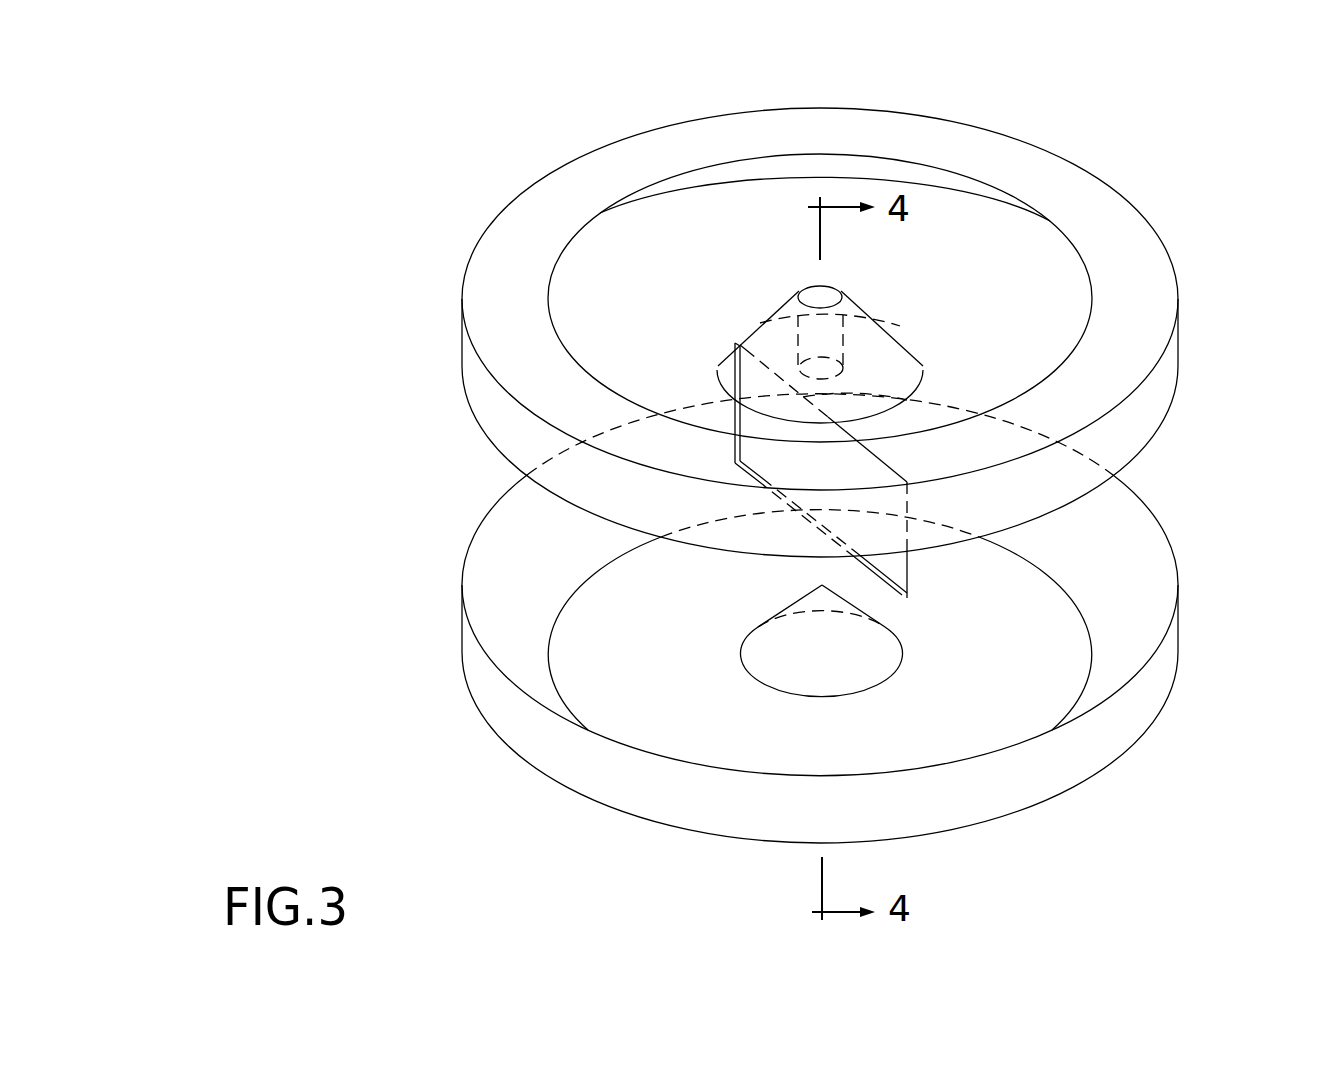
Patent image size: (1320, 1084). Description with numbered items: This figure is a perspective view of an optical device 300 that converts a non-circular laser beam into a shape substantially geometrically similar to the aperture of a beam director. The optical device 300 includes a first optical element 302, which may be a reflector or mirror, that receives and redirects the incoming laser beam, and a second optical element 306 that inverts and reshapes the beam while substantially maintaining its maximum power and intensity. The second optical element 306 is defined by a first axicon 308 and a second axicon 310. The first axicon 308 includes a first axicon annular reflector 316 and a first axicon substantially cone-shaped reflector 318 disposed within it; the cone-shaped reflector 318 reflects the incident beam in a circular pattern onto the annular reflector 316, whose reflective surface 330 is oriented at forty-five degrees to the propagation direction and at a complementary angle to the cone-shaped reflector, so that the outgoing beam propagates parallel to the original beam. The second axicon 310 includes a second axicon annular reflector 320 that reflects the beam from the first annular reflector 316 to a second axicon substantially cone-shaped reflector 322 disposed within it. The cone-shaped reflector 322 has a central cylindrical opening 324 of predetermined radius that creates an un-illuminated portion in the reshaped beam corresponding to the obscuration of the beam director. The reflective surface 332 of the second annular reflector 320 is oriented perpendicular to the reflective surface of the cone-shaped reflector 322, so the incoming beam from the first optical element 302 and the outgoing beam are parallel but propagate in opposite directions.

The optical device 300 is at (1168, 98).
The first optical element 302 is at (907, 597).
The second optical element 306 is at (1158, 470).
The first axicon 308 is at (887, 618).
The second axicon 310 is at (890, 332).
The first axicon annular reflector 316 is at (1133, 745).
The first axicon substantially cone-shaped reflector 318 is at (760, 683).
The second axicon annular reflector 320 is at (1158, 236).
The second axicon substantially cone-shaped reflector 322 is at (862, 337).
The central cylindrical opening 324 is at (823, 292).
The reflective surface of the annular reflector 330 is at (537, 597).
The reflective surface of the second axicon annular reflector 332 is at (722, 178).